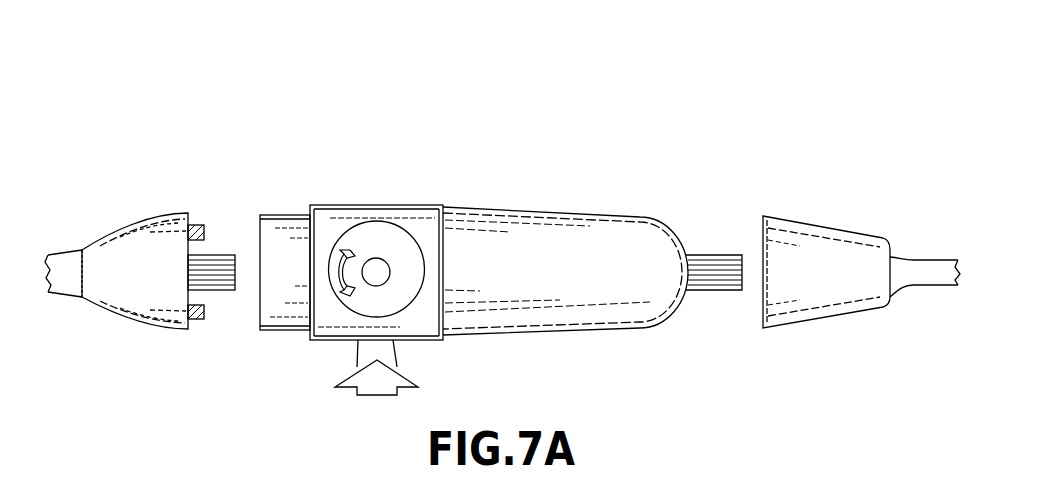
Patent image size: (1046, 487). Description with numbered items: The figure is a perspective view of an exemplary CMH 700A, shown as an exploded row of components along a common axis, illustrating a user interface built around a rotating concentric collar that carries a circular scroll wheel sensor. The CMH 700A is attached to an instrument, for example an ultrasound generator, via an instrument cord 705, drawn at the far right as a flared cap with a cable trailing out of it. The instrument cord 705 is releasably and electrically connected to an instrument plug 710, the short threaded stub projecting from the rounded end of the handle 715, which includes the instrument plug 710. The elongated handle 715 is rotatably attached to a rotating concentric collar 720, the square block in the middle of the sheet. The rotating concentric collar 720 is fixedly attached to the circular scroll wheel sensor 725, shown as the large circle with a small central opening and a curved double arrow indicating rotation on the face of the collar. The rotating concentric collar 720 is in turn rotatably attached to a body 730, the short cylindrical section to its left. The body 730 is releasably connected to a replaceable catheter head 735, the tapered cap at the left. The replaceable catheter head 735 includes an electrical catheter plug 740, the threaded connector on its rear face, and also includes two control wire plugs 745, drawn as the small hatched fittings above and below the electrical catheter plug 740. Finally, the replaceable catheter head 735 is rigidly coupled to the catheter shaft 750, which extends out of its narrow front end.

The CMH 700A is at (423, 121).
The instrument cord 705 is at (823, 228).
The instrument plug 710 is at (712, 255).
The handle 715 is at (540, 208).
The rotating concentric collar 720 is at (378, 205).
The circular scroll wheel sensor 725 is at (378, 244).
The body 730 is at (285, 215).
The replaceable catheter head 735 is at (118, 222).
The electrical catheter plug 740 is at (213, 291).
The control wire plugs 745 is at (198, 225).
The catheter shaft 750 is at (62, 293).